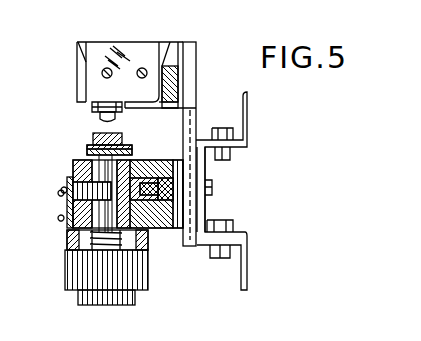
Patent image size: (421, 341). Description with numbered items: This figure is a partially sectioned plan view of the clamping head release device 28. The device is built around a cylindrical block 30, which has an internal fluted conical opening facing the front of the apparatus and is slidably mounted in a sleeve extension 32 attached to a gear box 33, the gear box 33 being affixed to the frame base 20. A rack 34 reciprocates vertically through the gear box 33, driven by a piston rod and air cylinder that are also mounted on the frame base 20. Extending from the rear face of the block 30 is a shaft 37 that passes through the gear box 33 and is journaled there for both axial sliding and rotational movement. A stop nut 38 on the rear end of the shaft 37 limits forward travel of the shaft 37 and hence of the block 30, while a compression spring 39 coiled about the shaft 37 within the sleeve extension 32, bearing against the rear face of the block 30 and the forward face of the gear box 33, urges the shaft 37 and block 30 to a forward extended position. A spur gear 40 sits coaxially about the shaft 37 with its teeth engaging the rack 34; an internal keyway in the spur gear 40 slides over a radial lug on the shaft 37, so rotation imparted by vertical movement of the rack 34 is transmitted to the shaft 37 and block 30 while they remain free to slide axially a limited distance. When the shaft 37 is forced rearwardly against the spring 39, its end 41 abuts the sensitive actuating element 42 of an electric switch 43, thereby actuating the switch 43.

The frame base 20 is at (248, 112).
The clamping head release device 28 is at (50, 226).
The cylindrical block 30 is at (140, 300).
The sleeve extension 32 is at (148, 272).
The gear box 33 is at (73, 170).
The rack 34 is at (157, 160).
The shaft 37 is at (90, 152).
The stop nut 38 is at (130, 160).
The compression spring 39 is at (148, 247).
The spur gear 40 is at (73, 188).
The end of shaft 41 is at (102, 118).
The sensitive actuating element 42 is at (94, 108).
The electric switch 43 is at (118, 52).